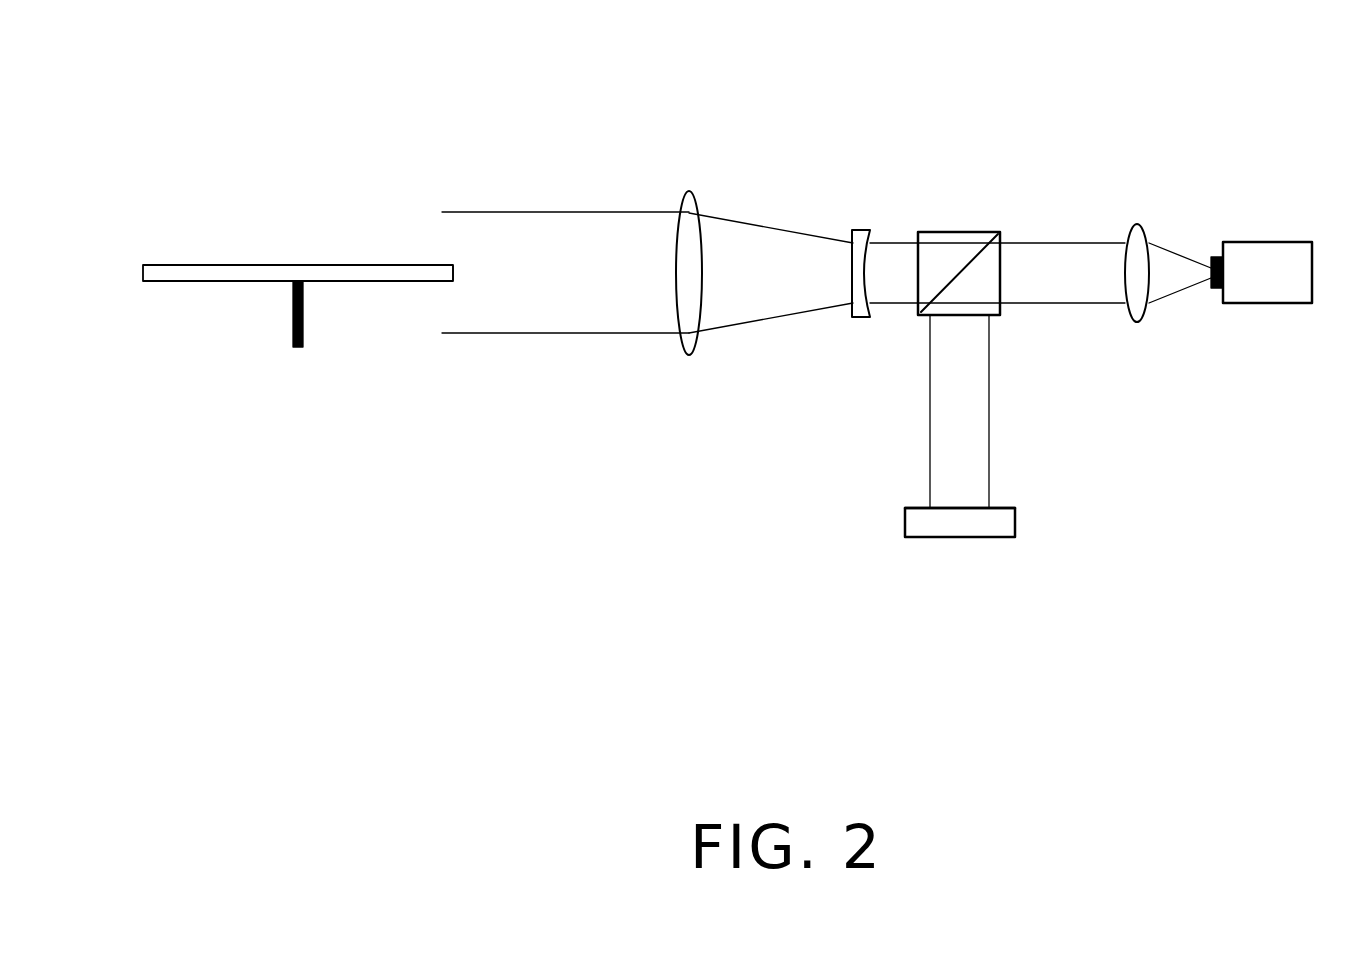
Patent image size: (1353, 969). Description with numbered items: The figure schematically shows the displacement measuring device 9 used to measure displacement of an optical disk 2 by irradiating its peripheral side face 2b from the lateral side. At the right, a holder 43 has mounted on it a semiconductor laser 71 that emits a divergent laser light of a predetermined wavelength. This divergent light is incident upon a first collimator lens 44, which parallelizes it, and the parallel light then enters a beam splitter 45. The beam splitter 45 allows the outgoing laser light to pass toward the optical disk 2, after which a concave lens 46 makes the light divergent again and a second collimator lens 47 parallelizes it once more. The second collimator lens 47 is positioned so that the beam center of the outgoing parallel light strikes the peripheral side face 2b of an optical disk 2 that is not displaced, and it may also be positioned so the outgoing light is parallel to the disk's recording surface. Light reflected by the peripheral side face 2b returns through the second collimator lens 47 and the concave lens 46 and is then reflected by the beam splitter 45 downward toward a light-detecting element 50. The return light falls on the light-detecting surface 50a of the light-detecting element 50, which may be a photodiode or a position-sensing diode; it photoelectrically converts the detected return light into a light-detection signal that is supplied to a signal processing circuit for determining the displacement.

The optical disk 2 is at (175, 262).
The peripheral side face 2b is at (455, 268).
The displacement measuring device 9 is at (681, 550).
The holder 43 is at (1268, 303).
The first collimator lens 44 is at (1128, 320).
The beam splitter 45 is at (960, 232).
The concave lens 46 is at (860, 228).
The second collimator lens 47 is at (686, 195).
The light-detecting element 50 is at (960, 540).
The light-detecting surface 50a is at (1000, 508).
The semiconductor laser 71 is at (1215, 255).